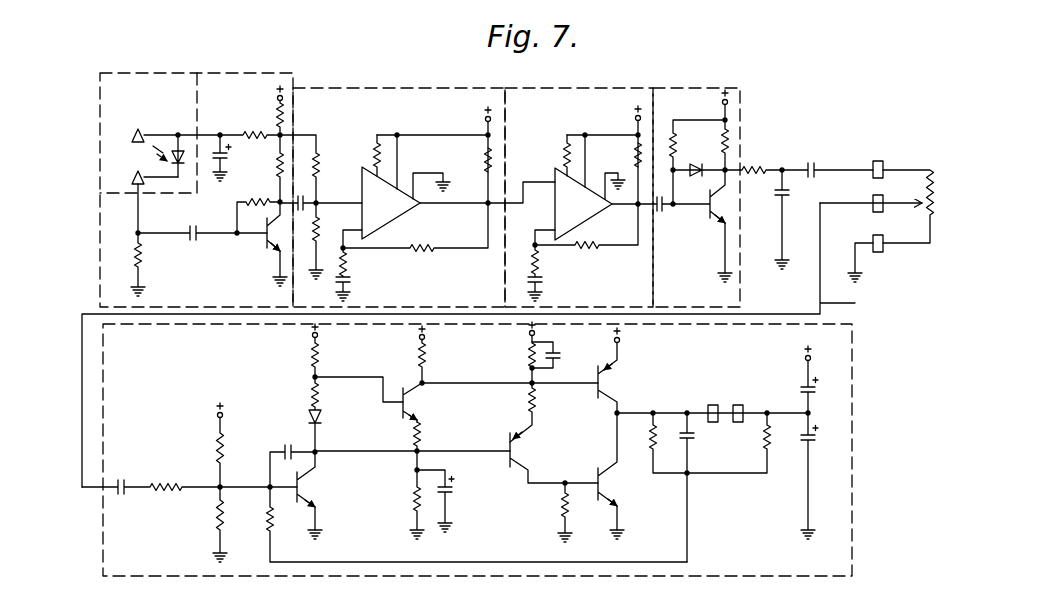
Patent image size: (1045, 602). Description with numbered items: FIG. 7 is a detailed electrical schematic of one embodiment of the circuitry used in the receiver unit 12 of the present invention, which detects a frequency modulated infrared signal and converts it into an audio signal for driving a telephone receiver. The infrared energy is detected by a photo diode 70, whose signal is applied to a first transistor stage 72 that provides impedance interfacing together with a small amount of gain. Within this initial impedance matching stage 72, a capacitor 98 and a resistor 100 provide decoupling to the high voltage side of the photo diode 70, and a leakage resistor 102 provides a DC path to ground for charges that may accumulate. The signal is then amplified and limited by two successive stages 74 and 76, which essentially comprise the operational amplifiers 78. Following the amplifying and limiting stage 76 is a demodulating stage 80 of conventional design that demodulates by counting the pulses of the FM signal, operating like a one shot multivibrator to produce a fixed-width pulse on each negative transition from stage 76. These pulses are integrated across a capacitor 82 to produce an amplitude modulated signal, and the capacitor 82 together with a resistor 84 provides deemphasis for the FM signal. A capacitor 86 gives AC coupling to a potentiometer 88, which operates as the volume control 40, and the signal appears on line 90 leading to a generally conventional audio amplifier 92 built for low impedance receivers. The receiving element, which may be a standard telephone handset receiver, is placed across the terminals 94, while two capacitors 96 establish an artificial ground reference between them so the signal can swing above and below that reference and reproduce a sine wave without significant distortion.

The apparatus 12 is at (836, 103).
The volume control 40 is at (941, 222).
The photo diode 70 is at (176, 131).
The first transistor stage 72 is at (238, 72).
The amplifying and limiting stage 74 is at (416, 86).
The amplifying and limiting stage 76 is at (620, 86).
The operational amplifier 78 is at (408, 212).
The demodulating stage 80 is at (746, 89).
The capacitor 82 is at (781, 200).
The resistor 84 is at (758, 166).
The capacitor 86 is at (818, 163).
The potentiometer 88 is at (936, 198).
The line 90 is at (478, 345).
The audio amplifier 92 is at (102, 528).
The terminals 94 is at (740, 404).
The capacitors 96 is at (826, 437).
The capacitor 98 is at (214, 131).
The resistor 100 is at (249, 131).
The leakage resistor 102 is at (147, 253).